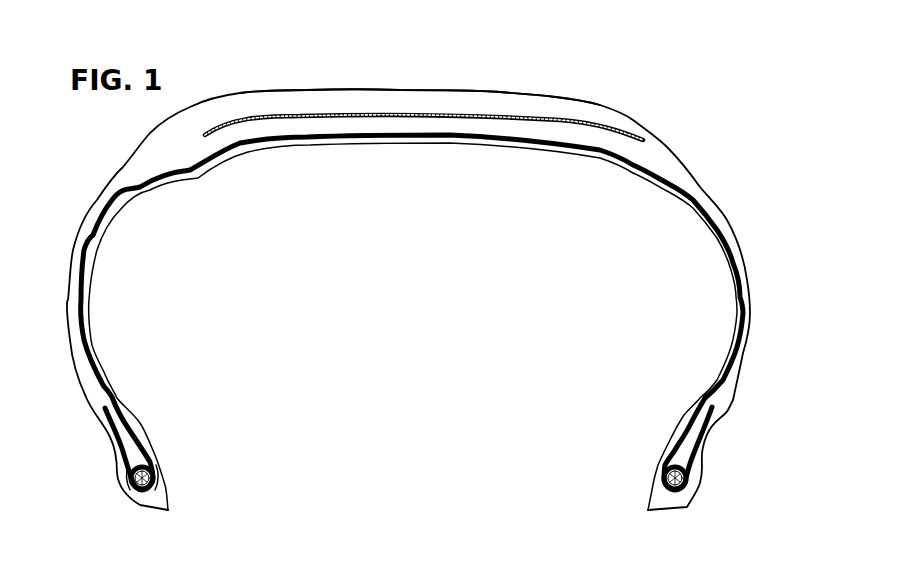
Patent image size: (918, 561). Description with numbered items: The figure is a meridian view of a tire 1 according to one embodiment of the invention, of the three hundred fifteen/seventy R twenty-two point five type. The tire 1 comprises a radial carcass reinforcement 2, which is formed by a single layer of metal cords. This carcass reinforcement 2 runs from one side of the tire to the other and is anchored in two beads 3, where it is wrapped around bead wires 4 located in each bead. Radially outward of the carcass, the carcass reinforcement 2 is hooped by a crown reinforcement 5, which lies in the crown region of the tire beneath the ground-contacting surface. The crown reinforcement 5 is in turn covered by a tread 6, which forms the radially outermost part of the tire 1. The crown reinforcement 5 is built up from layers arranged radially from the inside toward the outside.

The tire 1 is at (629, 63).
The radial carcass reinforcement 2 is at (88, 318).
The beads 3 is at (160, 498).
The bead wires 4 is at (157, 468).
The crown reinforcement 5 is at (262, 122).
The tread 6 is at (353, 91).